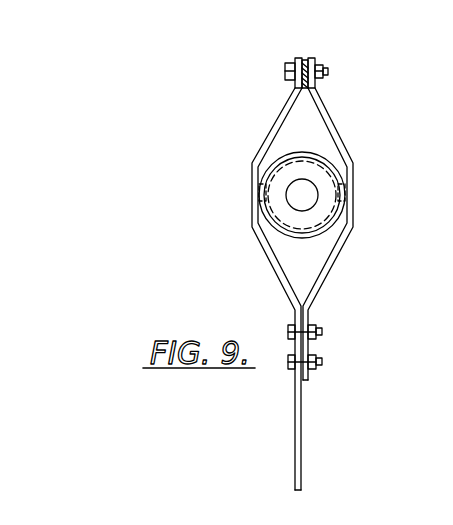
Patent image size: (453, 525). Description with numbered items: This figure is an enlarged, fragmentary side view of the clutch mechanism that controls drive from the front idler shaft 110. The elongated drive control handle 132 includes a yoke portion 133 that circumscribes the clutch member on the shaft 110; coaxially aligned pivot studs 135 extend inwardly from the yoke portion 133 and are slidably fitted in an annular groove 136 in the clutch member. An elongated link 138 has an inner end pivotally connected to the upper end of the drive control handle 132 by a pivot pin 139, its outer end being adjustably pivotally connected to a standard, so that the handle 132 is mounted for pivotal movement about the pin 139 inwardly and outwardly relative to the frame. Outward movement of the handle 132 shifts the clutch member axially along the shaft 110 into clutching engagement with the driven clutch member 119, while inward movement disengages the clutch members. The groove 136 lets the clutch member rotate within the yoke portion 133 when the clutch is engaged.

The front idler shaft 110 is at (297, 183).
The driven clutch member 119 is at (325, 182).
The drive control handle 132 is at (300, 466).
The yoke portion 133 is at (352, 233).
The pivot studs 135 is at (262, 180).
The annular groove 136 is at (268, 232).
The link 138 is at (304, 60).
The pivot pin 139 is at (329, 72).